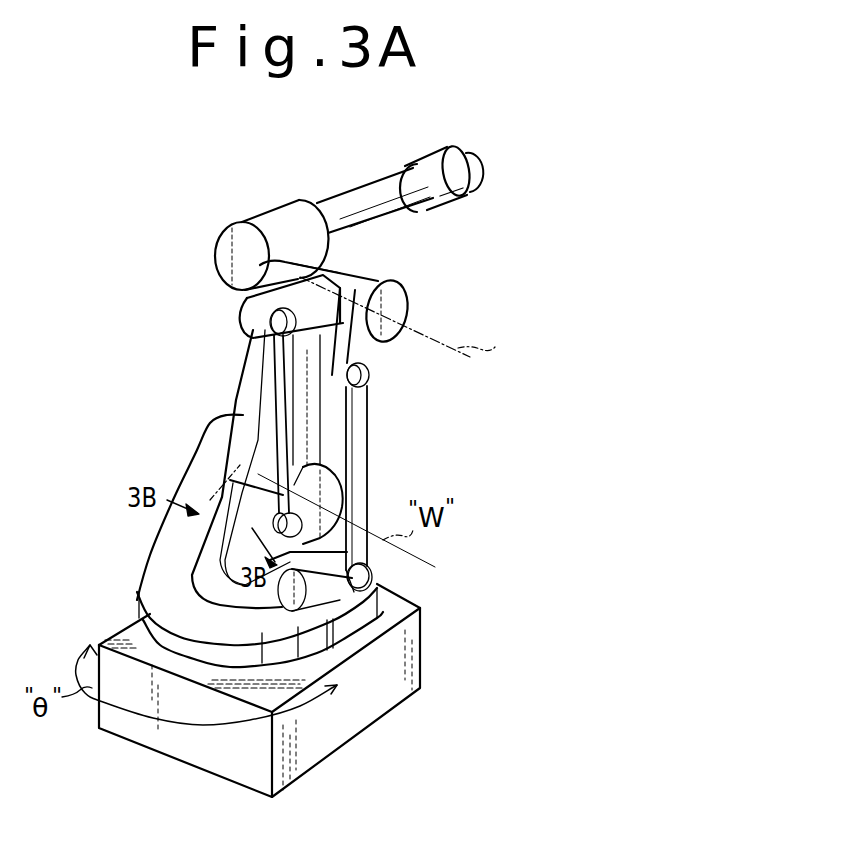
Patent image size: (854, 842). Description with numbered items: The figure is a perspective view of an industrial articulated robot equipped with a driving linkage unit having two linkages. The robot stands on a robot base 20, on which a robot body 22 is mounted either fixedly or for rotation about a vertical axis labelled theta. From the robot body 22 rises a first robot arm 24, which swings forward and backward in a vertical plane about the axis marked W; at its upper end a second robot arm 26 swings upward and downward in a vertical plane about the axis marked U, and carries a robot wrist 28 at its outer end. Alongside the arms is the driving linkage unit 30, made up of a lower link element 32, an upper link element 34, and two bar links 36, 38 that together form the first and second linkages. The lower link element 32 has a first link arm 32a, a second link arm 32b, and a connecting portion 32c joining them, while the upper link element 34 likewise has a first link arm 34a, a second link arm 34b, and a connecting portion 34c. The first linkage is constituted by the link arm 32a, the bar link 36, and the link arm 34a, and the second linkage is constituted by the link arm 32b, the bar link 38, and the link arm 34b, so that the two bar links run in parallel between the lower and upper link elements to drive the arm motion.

The robot base 20 is at (407, 627).
The robot body 22 is at (163, 543).
The first robot arm 24 is at (247, 353).
The second robot arm 26 is at (346, 196).
The robot wrist 28 is at (468, 196).
The driving linkage unit 30 is at (408, 302).
The lower link element 32 is at (318, 587).
The first link arm 32a is at (345, 570).
The second link arm 32b is at (207, 505).
The connecting portion 32c is at (240, 555).
The upper link element 34 is at (382, 268).
The first link arm 34a is at (383, 350).
The second link arm 34b is at (252, 320).
The connecting portion 34c is at (347, 263).
The bar link 36 is at (367, 447).
The bar link 38 is at (283, 407).